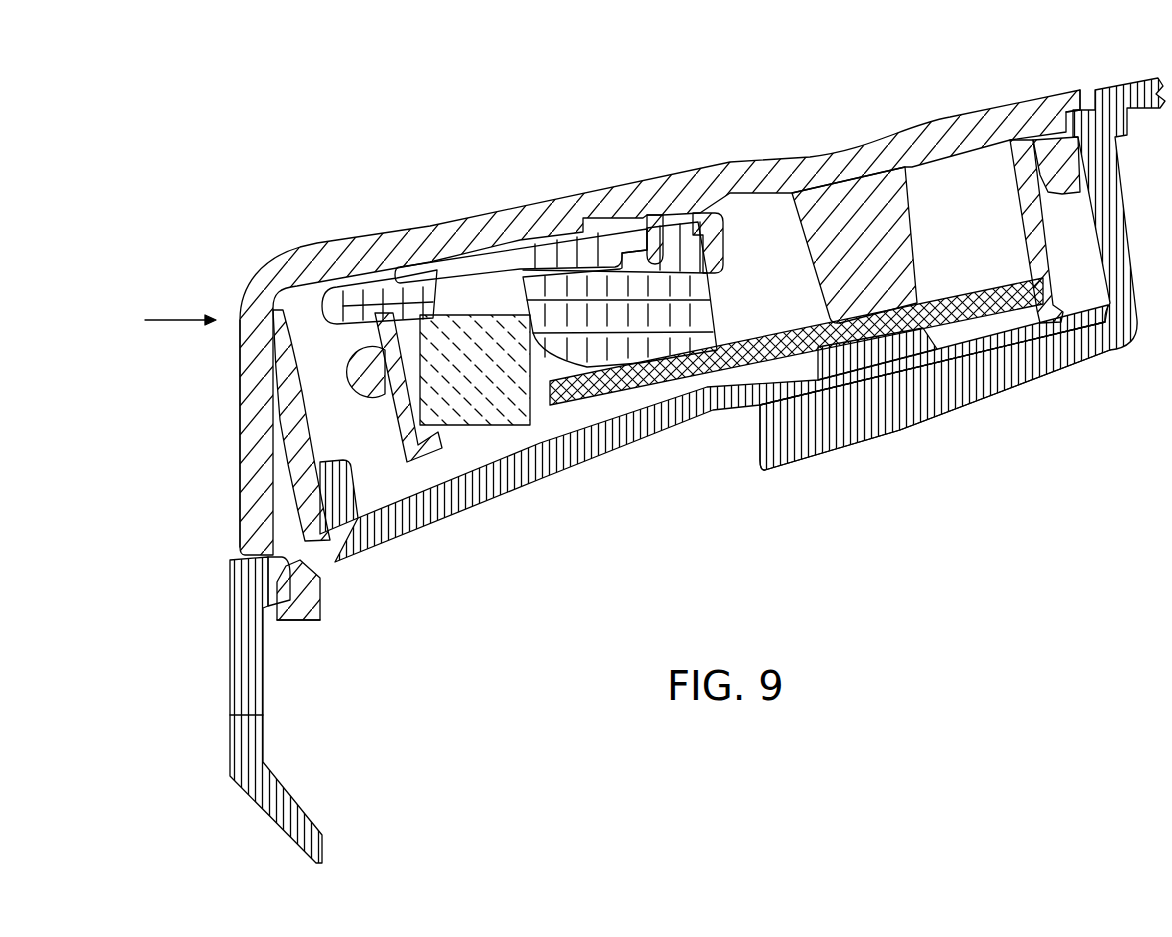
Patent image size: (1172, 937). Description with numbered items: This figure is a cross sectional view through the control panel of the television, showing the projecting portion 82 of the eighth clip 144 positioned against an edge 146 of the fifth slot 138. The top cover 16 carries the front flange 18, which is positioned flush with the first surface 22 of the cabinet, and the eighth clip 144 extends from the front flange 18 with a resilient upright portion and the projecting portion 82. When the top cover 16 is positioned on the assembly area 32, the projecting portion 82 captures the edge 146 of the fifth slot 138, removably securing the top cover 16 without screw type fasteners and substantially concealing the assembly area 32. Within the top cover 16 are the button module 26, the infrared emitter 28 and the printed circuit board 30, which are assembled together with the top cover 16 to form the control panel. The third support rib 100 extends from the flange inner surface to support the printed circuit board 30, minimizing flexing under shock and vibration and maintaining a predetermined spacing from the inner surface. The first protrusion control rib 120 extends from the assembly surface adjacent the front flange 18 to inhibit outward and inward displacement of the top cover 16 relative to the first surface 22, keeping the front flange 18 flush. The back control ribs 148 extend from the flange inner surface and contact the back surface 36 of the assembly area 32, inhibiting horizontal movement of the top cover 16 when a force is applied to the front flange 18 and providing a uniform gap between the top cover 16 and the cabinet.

The top cover 16 is at (226, 246).
The front flange 18 is at (240, 418).
The first surface 22 is at (230, 683).
The button module 26 is at (437, 277).
The infrared emitter 28 is at (487, 315).
The printed circuit board 30 is at (977, 320).
The assembly area 32 is at (560, 410).
The back surface 36 is at (1082, 358).
The projecting portion 82 is at (303, 612).
The third support rib 100 is at (830, 203).
The first protrusion control rib 120 is at (362, 238).
The fifth slot 138 is at (357, 490).
The eighth clip 144 is at (307, 583).
The edge 146 is at (280, 597).
The back control ribs 148 is at (1047, 93).